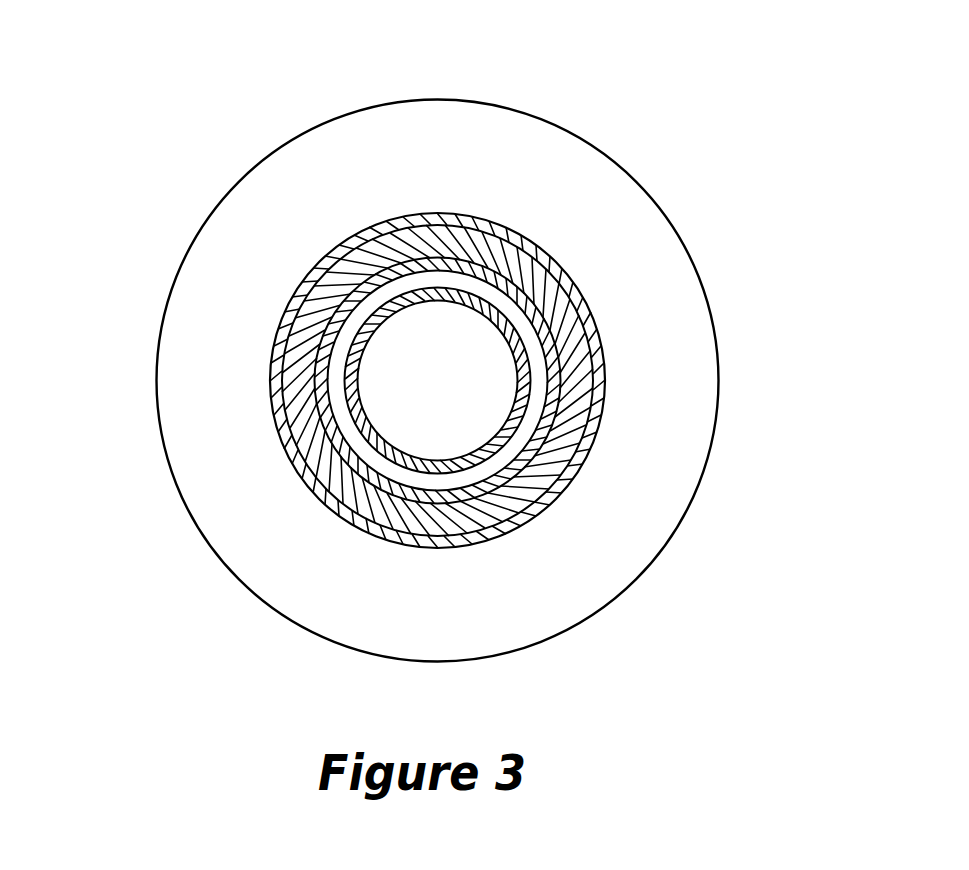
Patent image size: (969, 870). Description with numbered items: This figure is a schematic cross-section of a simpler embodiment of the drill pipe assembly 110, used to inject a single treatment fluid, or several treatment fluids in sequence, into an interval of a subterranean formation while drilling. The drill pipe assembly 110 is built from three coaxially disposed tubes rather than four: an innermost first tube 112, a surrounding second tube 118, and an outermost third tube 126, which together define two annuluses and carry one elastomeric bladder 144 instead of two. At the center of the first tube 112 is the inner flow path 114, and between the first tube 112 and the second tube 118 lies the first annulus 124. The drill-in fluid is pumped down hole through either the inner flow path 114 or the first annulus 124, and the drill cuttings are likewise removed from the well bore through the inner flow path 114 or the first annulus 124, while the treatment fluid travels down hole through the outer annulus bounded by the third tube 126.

The drill pipe assembly 110 is at (388, 136).
The first tube 112 is at (348, 432).
The inner flow path 114 is at (457, 352).
The second tube 118 is at (318, 306).
The first annulus 124 is at (537, 373).
The third tube 126 is at (270, 342).
The elastomeric bladder 144 is at (297, 295).